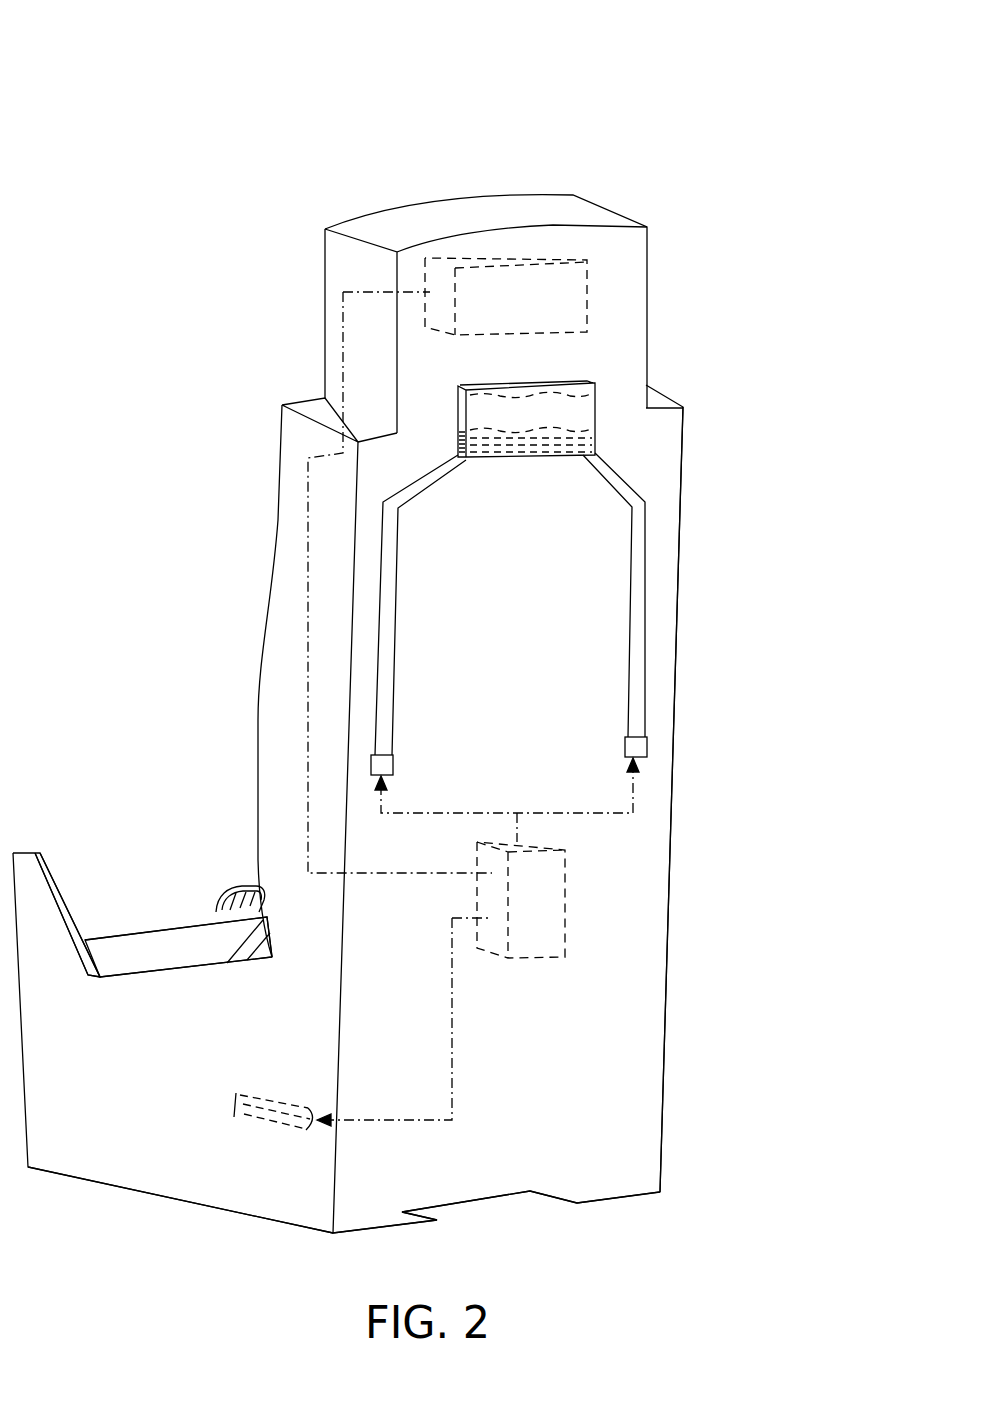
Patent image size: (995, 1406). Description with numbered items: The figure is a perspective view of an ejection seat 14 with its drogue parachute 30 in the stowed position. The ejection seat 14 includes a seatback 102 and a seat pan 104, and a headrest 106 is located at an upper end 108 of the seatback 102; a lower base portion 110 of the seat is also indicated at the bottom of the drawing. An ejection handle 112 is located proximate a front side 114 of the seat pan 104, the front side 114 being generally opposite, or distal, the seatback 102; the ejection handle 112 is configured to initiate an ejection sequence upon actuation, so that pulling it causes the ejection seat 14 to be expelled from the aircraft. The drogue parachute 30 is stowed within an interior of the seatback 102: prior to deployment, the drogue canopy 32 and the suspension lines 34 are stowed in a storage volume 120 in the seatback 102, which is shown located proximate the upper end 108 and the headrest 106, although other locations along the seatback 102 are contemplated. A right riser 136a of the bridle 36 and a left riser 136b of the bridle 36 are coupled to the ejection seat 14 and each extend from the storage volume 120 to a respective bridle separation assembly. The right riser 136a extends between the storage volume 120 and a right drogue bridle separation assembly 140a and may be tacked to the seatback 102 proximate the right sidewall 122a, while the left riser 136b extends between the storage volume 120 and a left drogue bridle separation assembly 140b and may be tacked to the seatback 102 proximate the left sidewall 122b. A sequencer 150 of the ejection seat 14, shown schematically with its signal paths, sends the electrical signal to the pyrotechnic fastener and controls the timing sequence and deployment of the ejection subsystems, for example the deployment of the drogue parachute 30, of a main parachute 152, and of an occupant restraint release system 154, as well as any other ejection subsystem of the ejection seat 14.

The ejection seat 14 is at (217, 131).
The drogue parachute 30 is at (440, 411).
The drogue canopy 32 is at (578, 400).
The suspension lines 34 is at (578, 448).
The bridle 36 is at (510, 604).
The seatback 102 is at (640, 472).
The seat pan 104 is at (177, 953).
The headrest 106 is at (587, 218).
The upper end 108 is at (315, 385).
The base 110 is at (223, 1207).
The ejection handle 112 is at (242, 890).
The front side 114 is at (100, 934).
The storage volume 120 is at (460, 384).
The right sidewall 122a is at (683, 525).
The left sidewall 122b is at (282, 532).
The right riser 136a is at (633, 625).
The left riser 136b is at (390, 622).
The right drogue bridle separation assembly 140a is at (662, 744).
The left drogue bridle separation assembly 140b is at (356, 765).
The sequencer 150 is at (550, 913).
The main parachute 152 is at (543, 292).
The occupant restraint release system 154 is at (242, 1112).